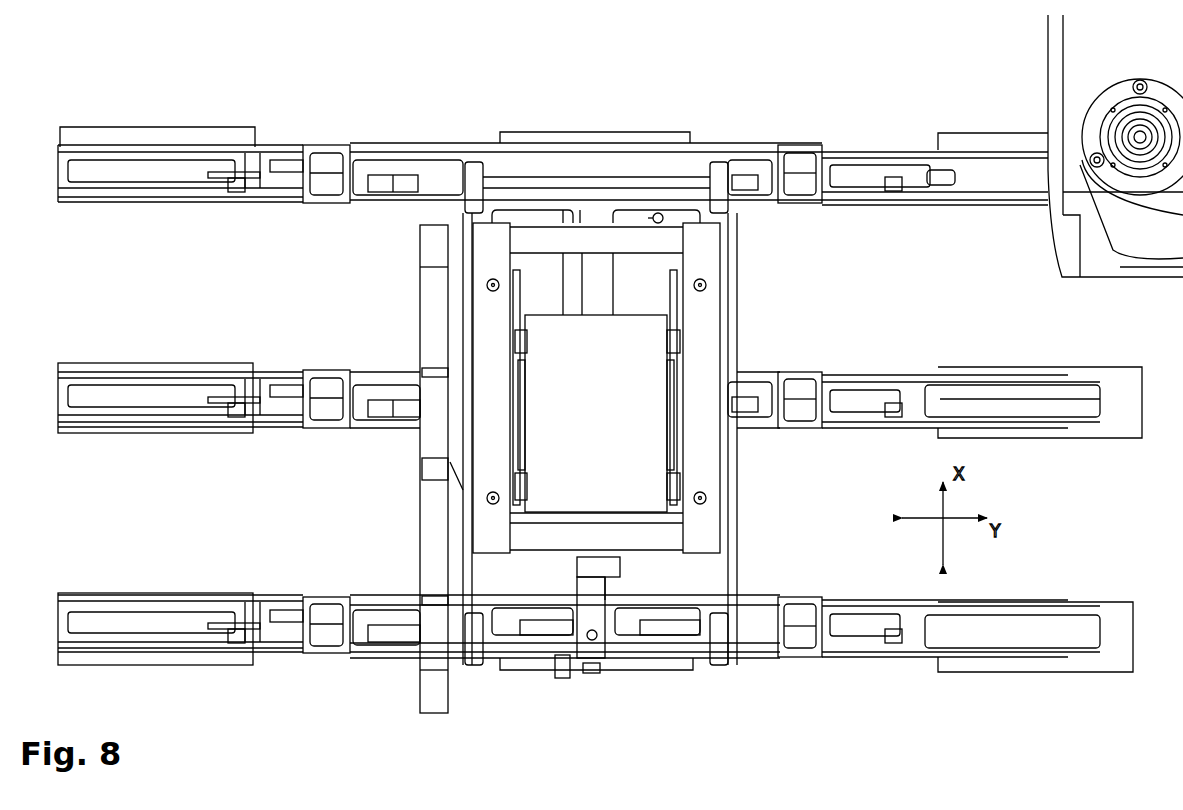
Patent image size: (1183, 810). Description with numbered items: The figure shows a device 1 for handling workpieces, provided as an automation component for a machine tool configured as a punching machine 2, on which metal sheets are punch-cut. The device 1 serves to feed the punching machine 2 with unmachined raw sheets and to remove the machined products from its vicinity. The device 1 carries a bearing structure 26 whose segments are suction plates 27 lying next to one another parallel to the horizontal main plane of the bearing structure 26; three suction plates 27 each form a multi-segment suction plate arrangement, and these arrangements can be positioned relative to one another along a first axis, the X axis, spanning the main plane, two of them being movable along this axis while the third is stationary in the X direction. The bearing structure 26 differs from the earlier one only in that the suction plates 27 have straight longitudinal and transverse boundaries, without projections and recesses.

The device 1 is at (750, 78).
The punching machine 2 is at (1090, 73).
The bearing structure 26 is at (364, 134).
The suction plates 27 is at (177, 122).